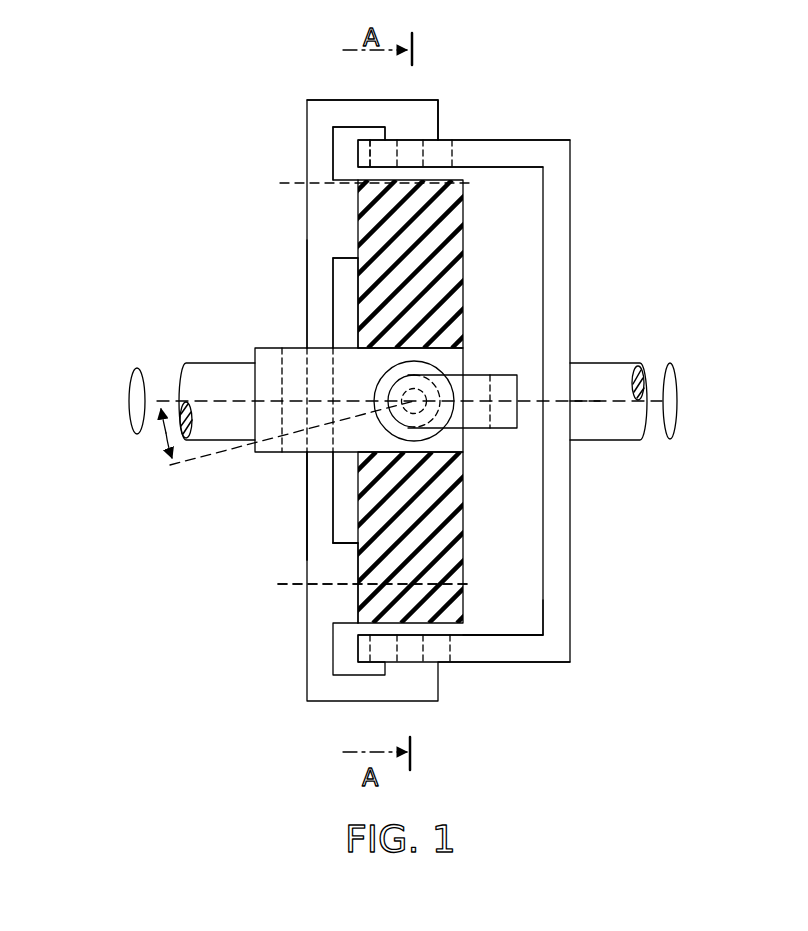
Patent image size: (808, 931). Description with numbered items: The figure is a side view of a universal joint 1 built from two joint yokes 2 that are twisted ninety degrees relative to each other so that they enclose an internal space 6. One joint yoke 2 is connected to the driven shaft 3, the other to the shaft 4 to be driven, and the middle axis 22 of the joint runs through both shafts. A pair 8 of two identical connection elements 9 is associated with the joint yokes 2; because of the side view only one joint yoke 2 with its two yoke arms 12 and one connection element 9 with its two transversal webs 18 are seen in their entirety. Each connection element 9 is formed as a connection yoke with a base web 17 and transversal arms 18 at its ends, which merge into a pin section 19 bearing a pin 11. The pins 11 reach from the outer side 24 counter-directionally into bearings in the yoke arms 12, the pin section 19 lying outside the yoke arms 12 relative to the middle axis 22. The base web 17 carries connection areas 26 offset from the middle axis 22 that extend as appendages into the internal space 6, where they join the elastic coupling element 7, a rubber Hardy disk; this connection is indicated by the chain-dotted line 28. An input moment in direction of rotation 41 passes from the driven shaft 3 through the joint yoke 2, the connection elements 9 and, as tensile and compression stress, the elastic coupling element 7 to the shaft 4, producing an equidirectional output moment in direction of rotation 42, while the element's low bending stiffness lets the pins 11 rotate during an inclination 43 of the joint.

The universal joint 1 is at (640, 203).
The joint yoke 2 is at (557, 288).
The driven shaft 3 is at (600, 428).
The shaft to be driven 4 is at (210, 370).
The internal space 6 is at (525, 625).
The elastic coupling element 7 is at (445, 500).
The pair of connection elements 8 is at (305, 278).
The connection element 9 is at (315, 495).
The pin 11 is at (413, 154).
The yoke arm 12 is at (490, 145).
The base web 17 is at (320, 322).
The transversal arm 18 is at (345, 112).
The pin section 19 is at (425, 115).
The middle axis of the joint 22 is at (580, 400).
The outer side 24 is at (497, 665).
The connection area 26 is at (345, 555).
The chain-dotted line 28 is at (295, 588).
The direction of rotation 41 is at (672, 380).
The direction of rotation 42 is at (141, 376).
The inclination 43 is at (162, 441).